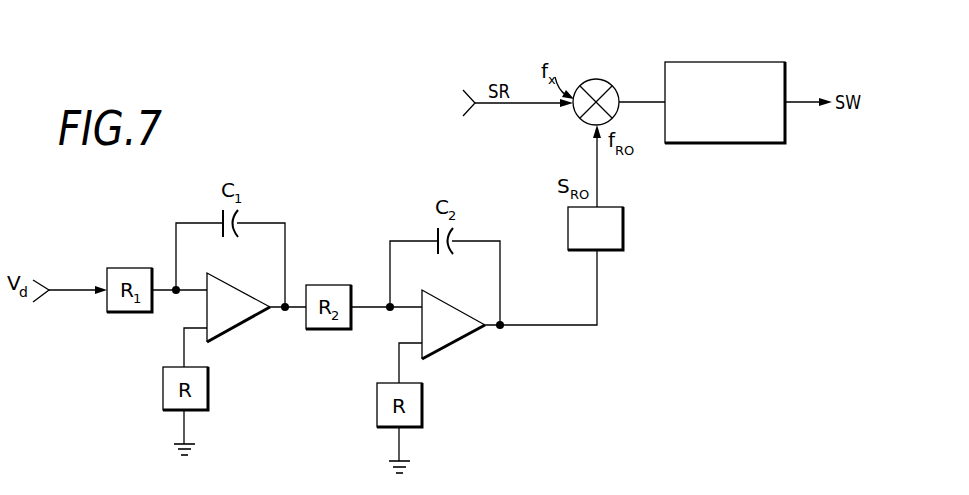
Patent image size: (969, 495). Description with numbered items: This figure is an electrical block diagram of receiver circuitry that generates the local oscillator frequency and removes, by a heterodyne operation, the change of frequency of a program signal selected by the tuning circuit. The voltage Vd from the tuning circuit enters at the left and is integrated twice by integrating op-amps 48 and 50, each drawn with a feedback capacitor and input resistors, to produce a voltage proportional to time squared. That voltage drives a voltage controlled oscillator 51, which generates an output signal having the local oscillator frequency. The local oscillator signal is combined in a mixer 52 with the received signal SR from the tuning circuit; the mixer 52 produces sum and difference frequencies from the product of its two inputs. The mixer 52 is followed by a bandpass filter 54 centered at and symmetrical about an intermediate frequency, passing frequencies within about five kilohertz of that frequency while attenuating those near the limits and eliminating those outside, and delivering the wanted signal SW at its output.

The integrating op-amp 48 is at (252, 333).
The integrating op-amp 50 is at (469, 351).
The voltage controlled oscillator 51 is at (623, 230).
The mixer 52 is at (596, 79).
The bandpass filter 54 is at (720, 62).